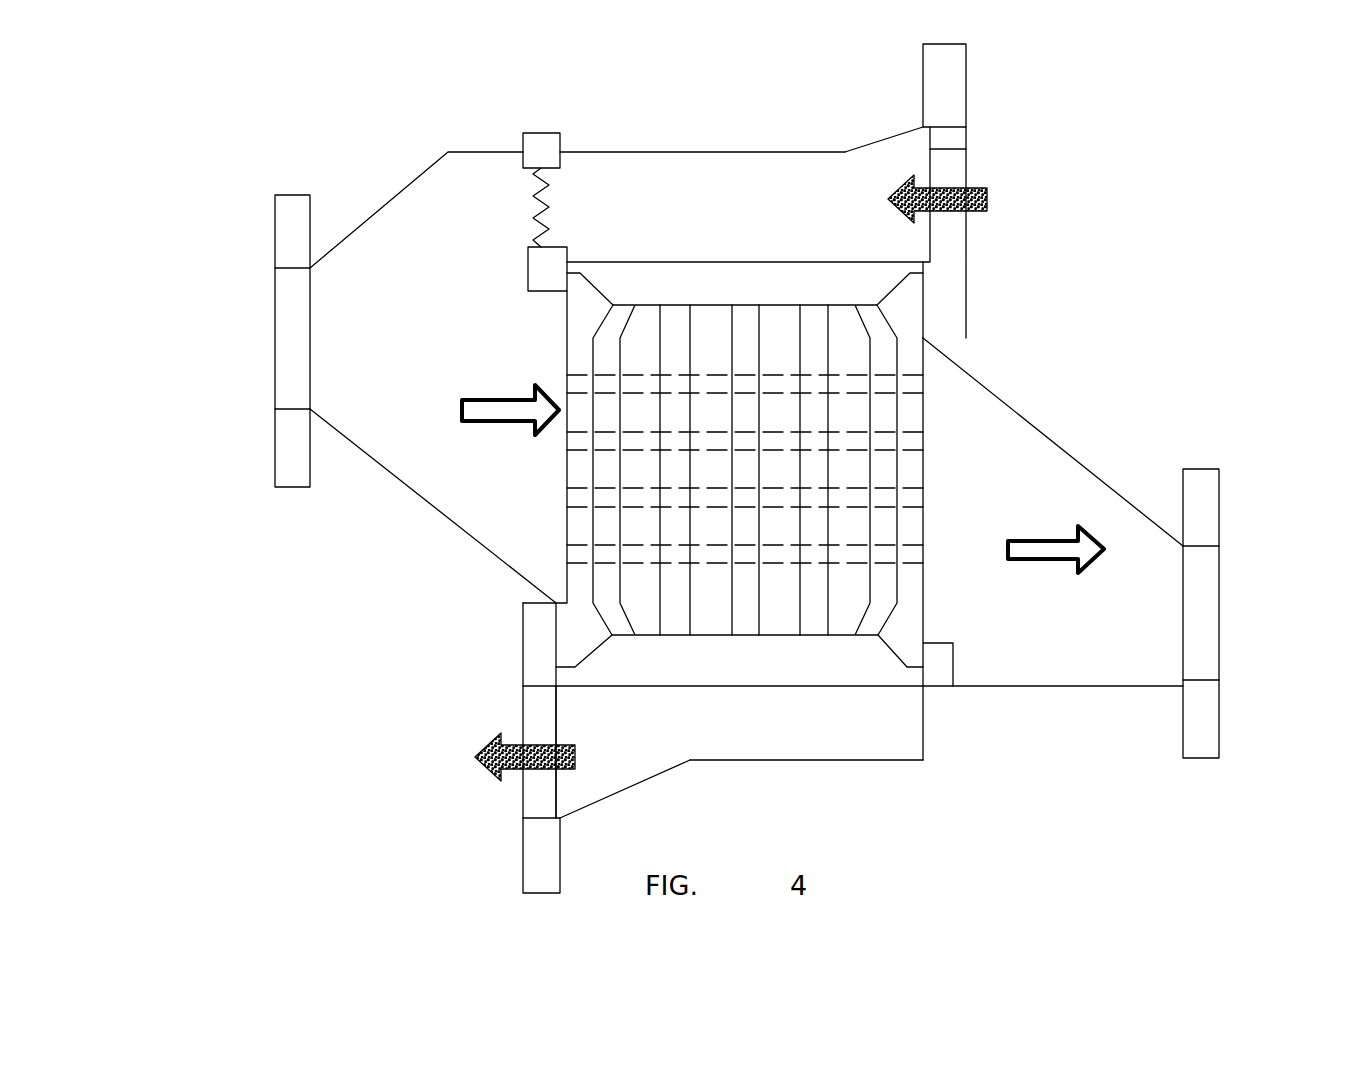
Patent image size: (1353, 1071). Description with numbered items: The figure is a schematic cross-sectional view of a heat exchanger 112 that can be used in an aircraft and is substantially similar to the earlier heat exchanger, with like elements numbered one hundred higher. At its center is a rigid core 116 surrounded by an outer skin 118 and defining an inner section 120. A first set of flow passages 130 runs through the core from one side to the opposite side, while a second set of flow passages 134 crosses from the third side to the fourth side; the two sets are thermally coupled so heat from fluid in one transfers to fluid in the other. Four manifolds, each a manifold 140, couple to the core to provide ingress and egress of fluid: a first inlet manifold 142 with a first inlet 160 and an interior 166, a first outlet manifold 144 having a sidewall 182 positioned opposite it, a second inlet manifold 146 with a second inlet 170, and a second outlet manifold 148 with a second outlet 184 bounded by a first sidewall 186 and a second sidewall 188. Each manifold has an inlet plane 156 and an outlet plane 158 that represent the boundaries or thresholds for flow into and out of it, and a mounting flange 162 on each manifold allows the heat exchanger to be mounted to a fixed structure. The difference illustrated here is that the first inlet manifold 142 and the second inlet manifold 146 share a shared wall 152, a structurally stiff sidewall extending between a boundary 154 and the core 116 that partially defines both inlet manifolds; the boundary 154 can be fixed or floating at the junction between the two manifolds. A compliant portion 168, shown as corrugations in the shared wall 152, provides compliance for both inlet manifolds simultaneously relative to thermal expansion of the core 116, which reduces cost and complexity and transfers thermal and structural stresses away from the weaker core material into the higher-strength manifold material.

The heat exchanger 112 is at (1183, 188).
The core 116 is at (913, 322).
The skin 118 is at (928, 383).
The inner section 120 is at (905, 570).
The first set of flow passages 130 is at (581, 548).
The second set of flow passages 134 is at (903, 474).
The manifold 140 is at (879, 132).
The first inlet manifold 142 is at (397, 442).
The first outlet manifold 144 is at (1103, 483).
The second inlet manifold 146 is at (815, 155).
The second outlet manifold 148 is at (720, 745).
The shared wall 152 is at (541, 246).
The boundary 154 is at (550, 140).
The inlet plane 156 is at (942, 149).
The outlet plane 158 is at (760, 262).
The first inlet 160 is at (275, 337).
The mounting flange 162 is at (966, 88).
The interior 166 is at (420, 341).
The compliant portion 168 is at (546, 211).
The second inlet 170 is at (966, 237).
The sidewall 182 is at (1219, 608).
The second outlet 184 is at (521, 792).
The first sidewall 186 is at (923, 750).
The second sidewall 188 is at (660, 772).